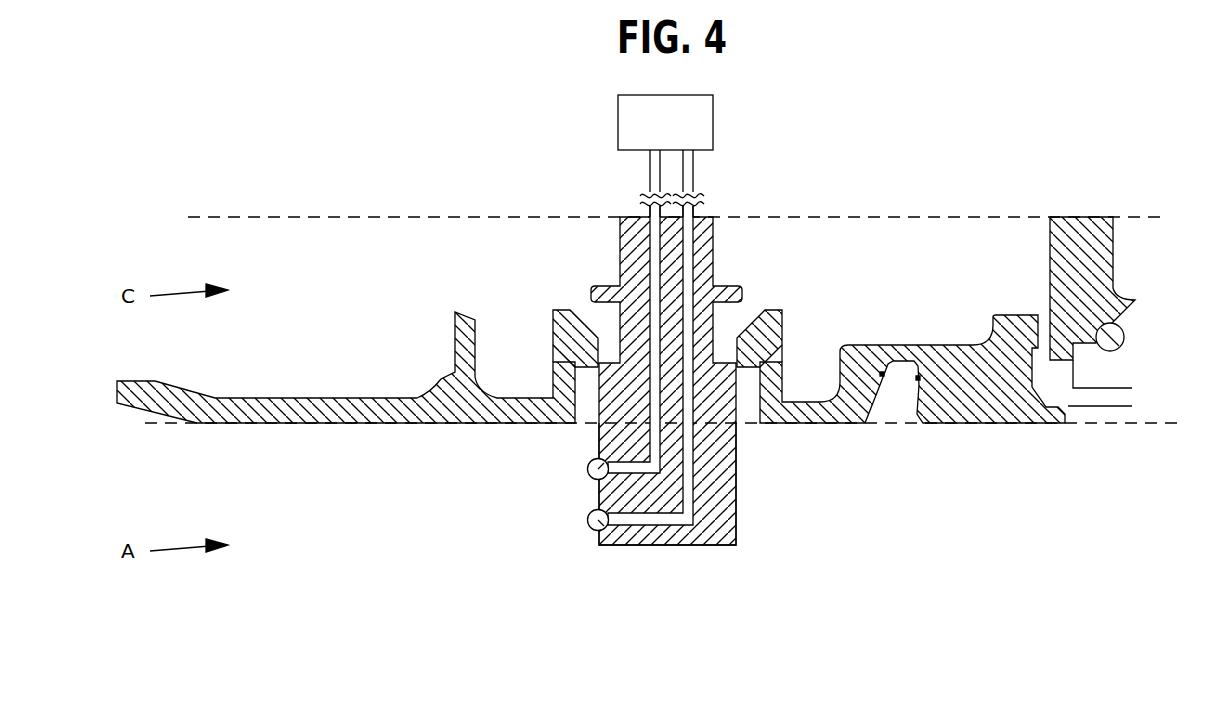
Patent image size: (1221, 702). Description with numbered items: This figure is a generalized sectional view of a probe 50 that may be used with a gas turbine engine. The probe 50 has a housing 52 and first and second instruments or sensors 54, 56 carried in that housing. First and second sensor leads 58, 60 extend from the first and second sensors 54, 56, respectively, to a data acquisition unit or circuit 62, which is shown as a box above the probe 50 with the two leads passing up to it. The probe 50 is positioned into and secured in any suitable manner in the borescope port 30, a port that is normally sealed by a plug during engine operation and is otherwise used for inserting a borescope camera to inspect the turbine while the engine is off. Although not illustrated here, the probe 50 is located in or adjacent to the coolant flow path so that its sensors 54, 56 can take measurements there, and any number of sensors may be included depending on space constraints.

The borescope port 30 is at (737, 426).
The probe 50 is at (736, 487).
The housing 52 is at (737, 530).
The first sensor 54 is at (589, 475).
The second sensor 56 is at (589, 516).
The first sensor lead 58 is at (632, 461).
The second sensor lead 60 is at (663, 527).
The data acquisition unit 62 is at (653, 136).